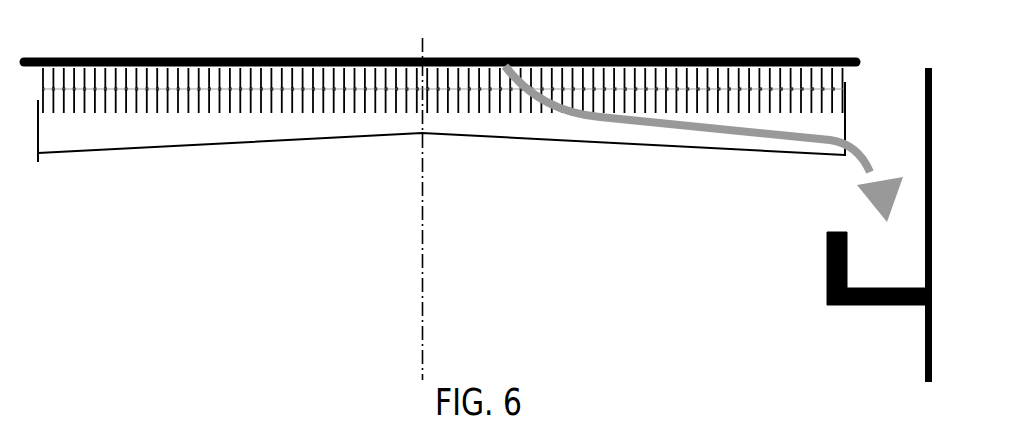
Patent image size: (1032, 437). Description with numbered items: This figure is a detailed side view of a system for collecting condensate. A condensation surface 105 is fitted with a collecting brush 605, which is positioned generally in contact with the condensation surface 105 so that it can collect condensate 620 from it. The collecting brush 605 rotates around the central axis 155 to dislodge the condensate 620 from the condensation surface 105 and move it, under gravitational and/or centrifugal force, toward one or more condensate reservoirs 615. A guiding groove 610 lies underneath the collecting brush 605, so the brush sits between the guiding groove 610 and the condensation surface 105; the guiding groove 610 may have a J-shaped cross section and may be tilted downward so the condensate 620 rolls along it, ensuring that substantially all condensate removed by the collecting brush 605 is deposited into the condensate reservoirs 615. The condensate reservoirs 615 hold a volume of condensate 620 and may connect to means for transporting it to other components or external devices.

The condensation surface 105 is at (443, 56).
The central axis 155 is at (422, 212).
The collecting brush 605 is at (124, 97).
The guiding groove 610 is at (539, 141).
The condensate reservoir 615 is at (826, 284).
The condensate 620 is at (891, 286).